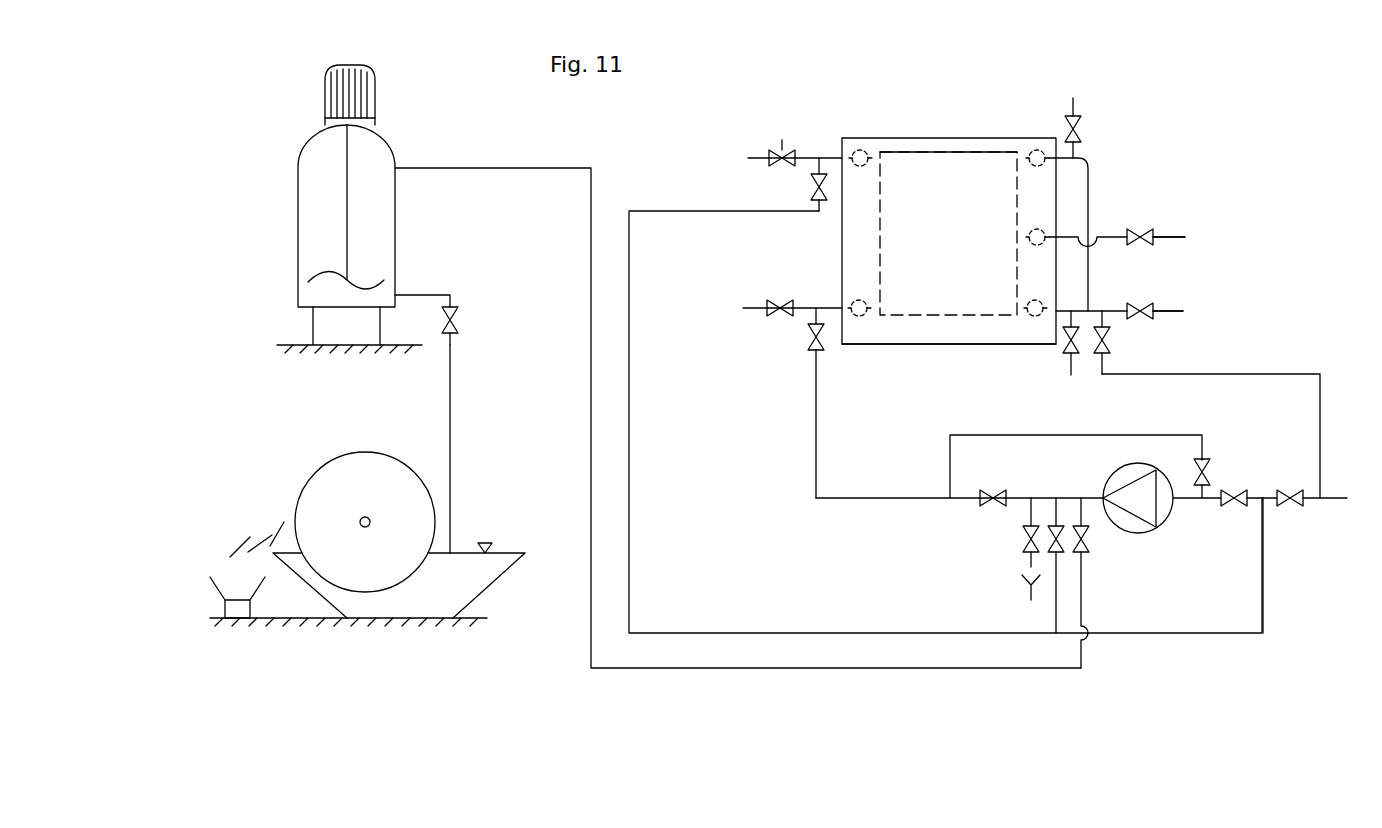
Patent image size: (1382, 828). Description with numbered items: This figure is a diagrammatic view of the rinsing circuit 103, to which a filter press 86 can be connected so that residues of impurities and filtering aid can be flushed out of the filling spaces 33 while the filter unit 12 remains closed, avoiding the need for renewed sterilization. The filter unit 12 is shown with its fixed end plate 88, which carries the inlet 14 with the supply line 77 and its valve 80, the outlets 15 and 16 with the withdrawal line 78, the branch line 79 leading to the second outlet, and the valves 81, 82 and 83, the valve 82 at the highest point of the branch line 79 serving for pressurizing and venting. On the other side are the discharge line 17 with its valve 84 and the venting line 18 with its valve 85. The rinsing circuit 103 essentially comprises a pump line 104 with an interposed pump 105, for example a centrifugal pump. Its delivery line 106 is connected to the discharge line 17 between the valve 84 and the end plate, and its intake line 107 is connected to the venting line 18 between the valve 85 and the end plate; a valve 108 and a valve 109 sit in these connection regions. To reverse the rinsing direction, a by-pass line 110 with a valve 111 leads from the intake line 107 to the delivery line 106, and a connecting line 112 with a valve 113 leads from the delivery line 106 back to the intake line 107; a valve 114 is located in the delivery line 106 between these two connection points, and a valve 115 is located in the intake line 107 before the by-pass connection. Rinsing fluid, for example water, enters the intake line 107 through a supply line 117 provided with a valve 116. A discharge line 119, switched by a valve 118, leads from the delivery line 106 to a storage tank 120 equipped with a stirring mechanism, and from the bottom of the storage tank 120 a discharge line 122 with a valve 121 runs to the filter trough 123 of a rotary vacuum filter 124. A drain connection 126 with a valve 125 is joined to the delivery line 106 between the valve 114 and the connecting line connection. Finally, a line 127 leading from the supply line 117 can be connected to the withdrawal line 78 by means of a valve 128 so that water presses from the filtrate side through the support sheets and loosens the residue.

The filter unit 12 is at (1012, 119).
The inlet 14 is at (1057, 237).
The outlet 15 is at (1057, 310).
The outlet 16 is at (1057, 162).
The discharge line 17 is at (840, 305).
The venting line 18 is at (842, 157).
The filling spaces 33 is at (995, 307).
The supply line 77 is at (1177, 237).
The withdrawal line 78 is at (1183, 313).
The branch line 79 is at (1089, 190).
The valve 80 is at (1144, 229).
The valve 81 is at (1143, 308).
The valve 82 is at (1082, 128).
The valve 83 is at (1062, 352).
The valve 84 is at (773, 315).
The valve 85 is at (773, 153).
The filter press 86 is at (924, 106).
The fixed end plate 88 is at (913, 345).
The rinsing circuit 103 is at (708, 524).
The pump line 104 is at (1172, 660).
The pump 105 is at (1147, 532).
The delivery line 106 is at (878, 497).
The intake line 107 is at (629, 423).
The valve 108 is at (815, 348).
The valve 109 is at (818, 183).
The by-pass line 110 is at (1060, 432).
The valve 111 is at (1208, 462).
The connecting line 112 is at (1052, 620).
The valve 113 is at (1060, 552).
The valve 114 is at (992, 493).
The valve 115 is at (1230, 508).
The valve 116 is at (1293, 512).
The supply line 117 is at (1335, 500).
The valve 118 is at (1089, 535).
The discharge line 119 is at (848, 670).
The storage tank 120 is at (388, 145).
The valve 121 is at (460, 317).
The discharge line 122 is at (452, 402).
The filter trough 123 is at (492, 583).
The rotary vacuum filter 124 is at (290, 474).
The valve 125 is at (1025, 547).
The drain connection 126 is at (1030, 513).
The line 127 is at (1245, 373).
The valve 128 is at (1108, 332).